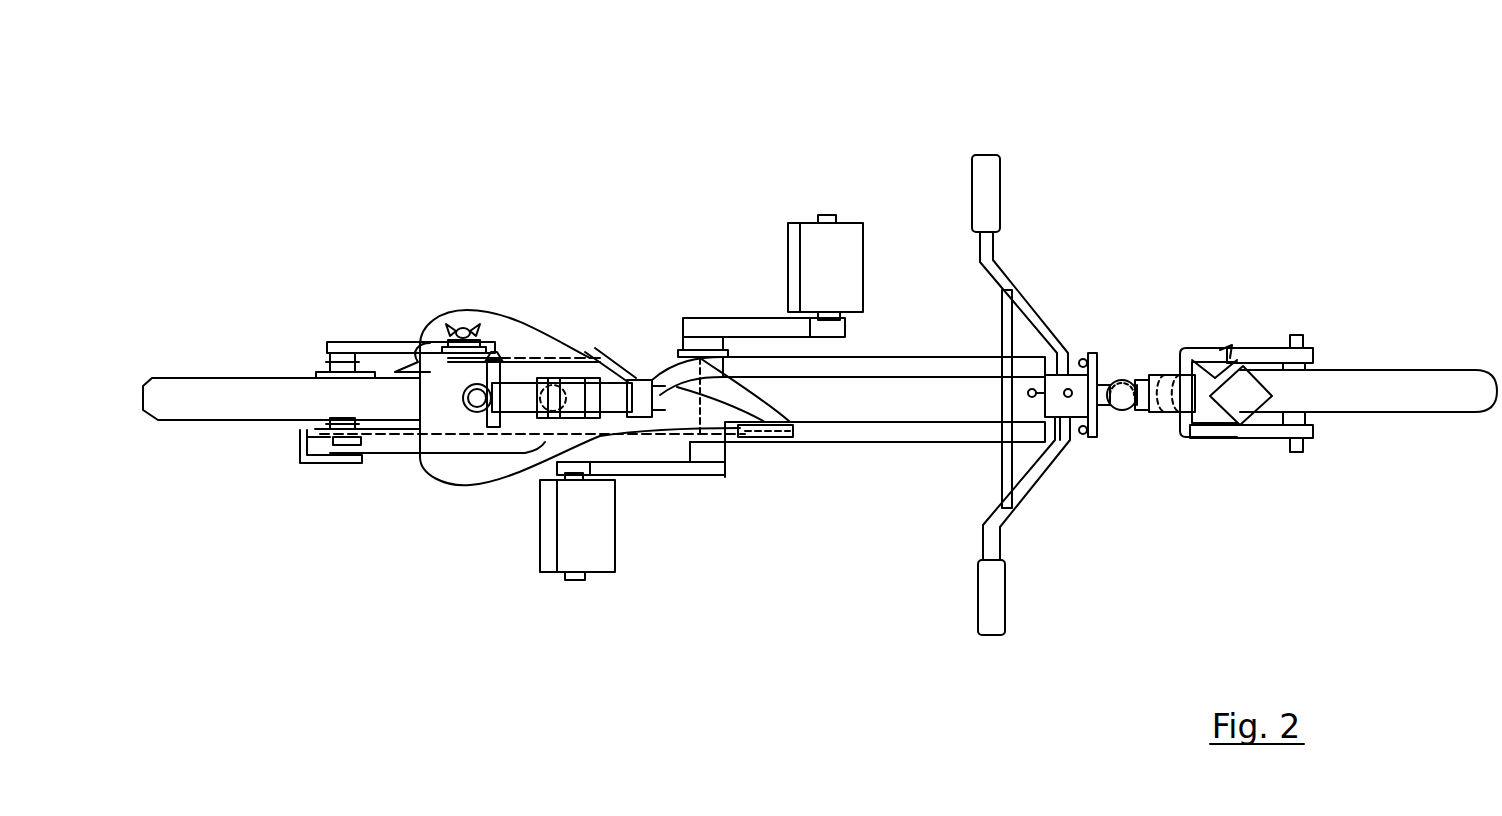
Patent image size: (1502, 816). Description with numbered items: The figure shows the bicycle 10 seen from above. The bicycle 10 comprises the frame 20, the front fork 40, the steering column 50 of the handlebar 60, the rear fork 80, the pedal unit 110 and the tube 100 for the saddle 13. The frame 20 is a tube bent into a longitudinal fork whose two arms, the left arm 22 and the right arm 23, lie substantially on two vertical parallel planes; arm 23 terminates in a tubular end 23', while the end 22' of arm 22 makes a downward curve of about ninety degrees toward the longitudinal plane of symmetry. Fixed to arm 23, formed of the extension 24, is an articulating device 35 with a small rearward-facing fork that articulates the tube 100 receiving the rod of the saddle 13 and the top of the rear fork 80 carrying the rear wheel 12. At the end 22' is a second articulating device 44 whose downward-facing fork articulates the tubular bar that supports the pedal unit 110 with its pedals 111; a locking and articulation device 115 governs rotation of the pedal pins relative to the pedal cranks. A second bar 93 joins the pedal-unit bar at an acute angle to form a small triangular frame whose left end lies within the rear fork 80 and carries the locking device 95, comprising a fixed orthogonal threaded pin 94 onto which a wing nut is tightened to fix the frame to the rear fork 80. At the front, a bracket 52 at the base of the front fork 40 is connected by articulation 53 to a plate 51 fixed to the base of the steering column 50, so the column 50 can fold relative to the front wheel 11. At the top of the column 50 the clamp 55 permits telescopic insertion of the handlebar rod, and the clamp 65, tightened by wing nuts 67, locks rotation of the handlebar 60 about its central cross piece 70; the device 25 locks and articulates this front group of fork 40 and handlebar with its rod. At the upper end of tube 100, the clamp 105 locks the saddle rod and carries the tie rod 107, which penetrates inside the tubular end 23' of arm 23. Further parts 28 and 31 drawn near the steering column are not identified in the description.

The bicycle 10 is at (1208, 182).
The front wheel 11 is at (1439, 380).
The rear wheel 12 is at (205, 398).
The saddle 13 is at (430, 372).
The frame 20 is at (912, 340).
The left arm 22 is at (861, 337).
The end of left arm 22' is at (670, 365).
The right arm 23 is at (867, 459).
The tubular end 23' is at (562, 462).
The extension 24 is at (765, 408).
The locking and articulation device 25 is at (1112, 435).
The mounting plate 28 is at (1086, 442).
The shaft 31 is at (1100, 358).
The articulating device 35 is at (594, 342).
The front fork 40 is at (1320, 330).
The articulating device 44 is at (635, 448).
The steering column 50 is at (1163, 345).
The plate 51 is at (1248, 383).
The bracket 52 is at (1205, 364).
The articulation 53 is at (1270, 405).
The clamp 55 is at (1148, 438).
The handlebar 60 is at (1032, 275).
The clamp 65 is at (1041, 440).
The wing nuts 67 is at (1063, 378).
The central cross piece 70 is at (1072, 425).
The rear fork 80 is at (392, 470).
The second bar 93 is at (560, 343).
The threaded pin 94 is at (447, 338).
The locking device 95 is at (467, 318).
The saddle tube 100 is at (471, 448).
The clamp 105 is at (497, 340).
The tie rod 107 is at (537, 442).
The pedal unit 110 is at (664, 490).
The pedals 111 is at (808, 247).
The locking and articulation device 115 is at (815, 303).